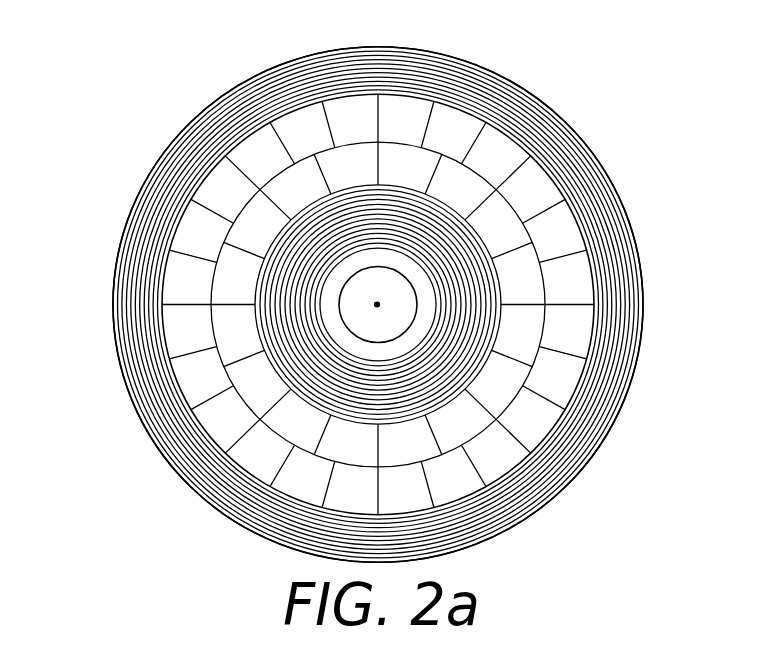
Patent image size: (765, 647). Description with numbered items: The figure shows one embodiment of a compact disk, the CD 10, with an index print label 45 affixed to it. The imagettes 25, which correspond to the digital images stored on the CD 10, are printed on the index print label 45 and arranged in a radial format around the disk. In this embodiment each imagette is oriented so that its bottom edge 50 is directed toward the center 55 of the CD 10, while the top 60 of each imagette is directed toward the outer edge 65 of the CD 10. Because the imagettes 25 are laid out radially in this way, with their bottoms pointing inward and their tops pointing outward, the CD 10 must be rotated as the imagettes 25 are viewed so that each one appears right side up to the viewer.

The CD 10 is at (603, 175).
The imagettes 25 is at (343, 108).
The index print label 45 is at (508, 137).
The bottom edge 50 is at (208, 345).
The center 55 is at (378, 306).
The top 60 is at (175, 383).
The outer edge 65 is at (183, 478).